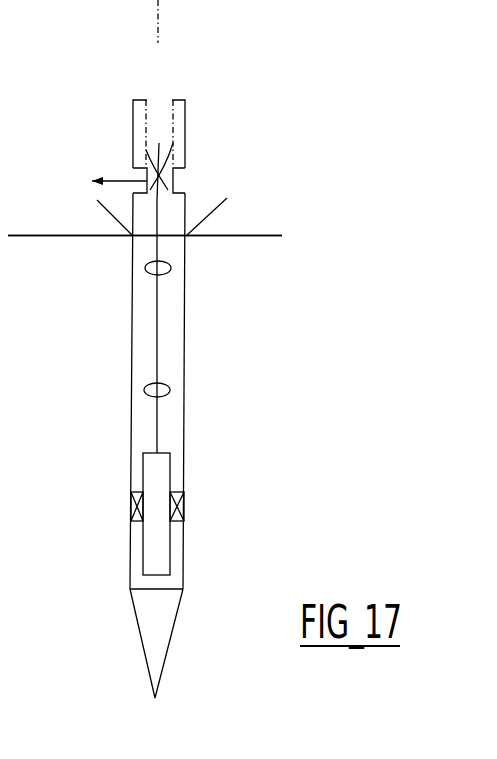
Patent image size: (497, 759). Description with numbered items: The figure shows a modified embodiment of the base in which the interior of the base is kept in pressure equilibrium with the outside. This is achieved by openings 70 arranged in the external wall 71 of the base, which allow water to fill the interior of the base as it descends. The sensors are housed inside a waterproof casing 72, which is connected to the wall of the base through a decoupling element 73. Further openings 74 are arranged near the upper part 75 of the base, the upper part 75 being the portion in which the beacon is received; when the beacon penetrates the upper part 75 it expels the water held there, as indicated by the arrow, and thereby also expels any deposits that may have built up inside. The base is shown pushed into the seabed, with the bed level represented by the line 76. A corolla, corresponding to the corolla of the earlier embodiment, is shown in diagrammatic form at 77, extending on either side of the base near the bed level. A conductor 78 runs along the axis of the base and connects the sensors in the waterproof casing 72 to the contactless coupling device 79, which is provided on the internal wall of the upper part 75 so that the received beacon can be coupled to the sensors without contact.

The openings 70 is at (169, 381).
The external wall 71 is at (131, 401).
The waterproof casing 72 is at (160, 474).
The decoupling element 73 is at (186, 512).
The openings 74 is at (174, 177).
The upper part 75 is at (157, 107).
The line 76 is at (110, 239).
The corolla 77 is at (102, 206).
The conductor 78 is at (155, 340).
The contactless coupling device 79 is at (177, 133).